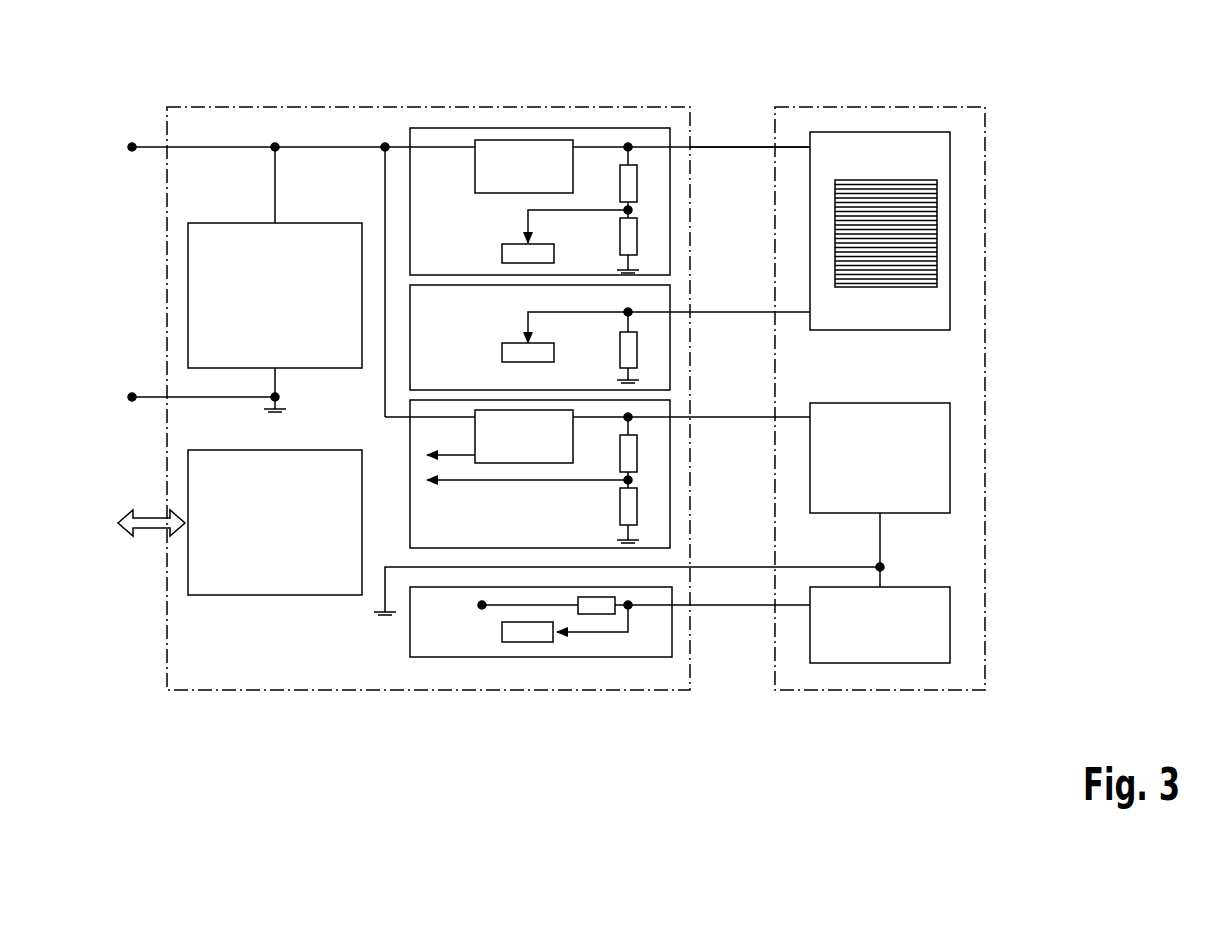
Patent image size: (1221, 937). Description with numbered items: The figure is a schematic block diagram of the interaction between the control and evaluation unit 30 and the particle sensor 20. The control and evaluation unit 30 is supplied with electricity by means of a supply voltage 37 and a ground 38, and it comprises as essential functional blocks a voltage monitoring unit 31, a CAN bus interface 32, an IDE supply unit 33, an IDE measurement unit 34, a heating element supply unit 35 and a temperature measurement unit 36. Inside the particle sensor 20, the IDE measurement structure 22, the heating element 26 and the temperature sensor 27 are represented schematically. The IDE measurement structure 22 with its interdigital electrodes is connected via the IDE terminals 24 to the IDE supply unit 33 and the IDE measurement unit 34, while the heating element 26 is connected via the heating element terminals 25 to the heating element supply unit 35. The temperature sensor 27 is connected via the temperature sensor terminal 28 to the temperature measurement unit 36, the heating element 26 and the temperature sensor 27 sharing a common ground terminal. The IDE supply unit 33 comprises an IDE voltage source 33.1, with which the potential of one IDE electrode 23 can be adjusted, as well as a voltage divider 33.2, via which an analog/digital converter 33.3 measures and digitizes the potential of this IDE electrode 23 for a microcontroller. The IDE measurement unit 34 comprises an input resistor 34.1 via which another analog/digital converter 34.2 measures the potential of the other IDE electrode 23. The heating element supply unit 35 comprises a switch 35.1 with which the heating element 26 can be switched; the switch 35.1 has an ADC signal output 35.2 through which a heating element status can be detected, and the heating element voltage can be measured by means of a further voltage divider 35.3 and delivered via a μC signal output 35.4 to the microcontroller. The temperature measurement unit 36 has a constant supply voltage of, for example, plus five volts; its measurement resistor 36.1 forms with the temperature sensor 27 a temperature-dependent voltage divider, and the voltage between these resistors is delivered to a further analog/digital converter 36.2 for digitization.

The particle sensor 20 is at (1012, 125).
The IDE measurement structure 22 is at (950, 210).
The IDE electrode 23 is at (888, 288).
The IDE terminals 24 is at (735, 146).
The heating element terminals 25 is at (795, 416).
The heating element 26 is at (950, 445).
The temperature sensor 27 is at (950, 612).
The temperature sensor terminal 28 is at (733, 608).
The control and evaluation unit 30 is at (697, 105).
The voltage monitoring unit 31 is at (226, 222).
The CAN bus interface 32 is at (259, 597).
The IDE supply unit 33 is at (448, 127).
The IDE voltage source 33.1 is at (518, 139).
The voltage divider 33.2 is at (637, 172).
The analog/digital converter 33.3 is at (501, 253).
The IDE measurement unit 34 is at (410, 315).
The input resistor 34.1 is at (620, 350).
The analog/digital converter 34.2 is at (502, 357).
The heating element supply unit 35 is at (410, 522).
The switch 35.1 is at (560, 464).
The ADC signal output 35.2 is at (472, 454).
The voltage divider 35.3 is at (637, 443).
The μC signal output 35.4 is at (515, 481).
The temperature measurement unit 36 is at (475, 658).
The measurement resistor 36.1 is at (600, 615).
The analog/digital converter 36.2 is at (535, 643).
The supply voltage 37 is at (150, 146).
The ground 38 is at (148, 396).